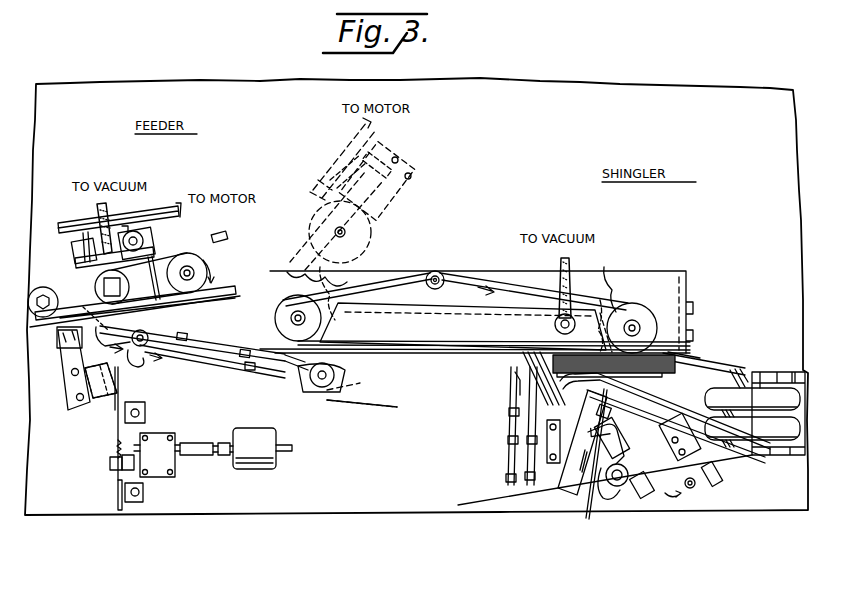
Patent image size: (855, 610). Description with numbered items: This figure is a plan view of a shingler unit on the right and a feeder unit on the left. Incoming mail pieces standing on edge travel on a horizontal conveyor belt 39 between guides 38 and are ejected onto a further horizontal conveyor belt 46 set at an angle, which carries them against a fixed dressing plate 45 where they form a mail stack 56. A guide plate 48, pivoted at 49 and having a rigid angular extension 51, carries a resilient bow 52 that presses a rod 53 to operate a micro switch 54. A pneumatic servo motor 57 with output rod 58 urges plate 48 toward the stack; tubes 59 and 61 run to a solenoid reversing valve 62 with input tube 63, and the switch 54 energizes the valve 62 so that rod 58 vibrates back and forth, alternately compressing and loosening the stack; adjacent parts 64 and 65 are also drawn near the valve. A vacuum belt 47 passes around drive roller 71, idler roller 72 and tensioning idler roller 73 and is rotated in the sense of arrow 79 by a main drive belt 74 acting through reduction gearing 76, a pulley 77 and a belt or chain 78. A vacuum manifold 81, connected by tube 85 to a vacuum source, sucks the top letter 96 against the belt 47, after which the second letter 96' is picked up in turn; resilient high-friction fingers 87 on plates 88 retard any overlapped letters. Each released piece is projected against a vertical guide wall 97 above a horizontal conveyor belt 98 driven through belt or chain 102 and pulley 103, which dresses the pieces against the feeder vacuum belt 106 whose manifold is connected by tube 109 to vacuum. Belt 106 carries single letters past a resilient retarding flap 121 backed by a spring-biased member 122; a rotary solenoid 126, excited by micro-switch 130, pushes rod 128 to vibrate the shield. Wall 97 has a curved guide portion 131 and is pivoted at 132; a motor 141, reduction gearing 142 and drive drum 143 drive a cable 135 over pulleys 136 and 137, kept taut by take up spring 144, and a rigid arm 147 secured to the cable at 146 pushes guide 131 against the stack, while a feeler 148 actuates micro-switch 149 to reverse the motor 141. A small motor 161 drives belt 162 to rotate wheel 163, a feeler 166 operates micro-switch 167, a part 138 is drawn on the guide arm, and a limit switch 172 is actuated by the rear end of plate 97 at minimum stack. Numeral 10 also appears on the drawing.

The frame / section line 10 is at (85, 370).
The guides 38 is at (778, 400).
The horizontal conveyor belt 39 is at (770, 382).
The fixed dressing plate 45 is at (515, 372).
The horizontal conveyor belt 46 is at (742, 372).
The vacuum belt 47 is at (612, 292).
The guide plate 48 is at (710, 413).
The pivot 49 is at (677, 417).
The rigid angular extension 51 is at (688, 492).
The resilient bow 52 is at (636, 390).
The rod 53 is at (607, 383).
The micro switch 54 is at (627, 421).
The mail stack 56 is at (673, 354).
The pneumatic servo motor 57 is at (560, 490).
The output rod 58 is at (593, 428).
The tube 59 is at (581, 500).
The tube 61 is at (627, 456).
The solenoid controlled reversing valve 62 is at (619, 487).
The input tube 63 is at (597, 503).
The stop block 64 is at (720, 474).
The latch block 65 is at (660, 497).
The drive roller 71 is at (310, 305).
The idler roller 72 is at (636, 308).
The tensioning idler roller 73 is at (438, 271).
The main drive belt 74 is at (372, 126).
The reduction gearing 76 is at (382, 196).
The pulley 77 is at (322, 218).
The belt or sprocket chain 78 is at (300, 255).
The arrow 79 is at (492, 268).
The vacuum manifold 81 is at (392, 315).
The vacuum tube 85 is at (572, 264).
The resilient high-friction fingers 87 is at (542, 358).
The plates 88 is at (523, 463).
The top letter 96 is at (368, 371).
The second letter 96' is at (429, 381).
The vertical guide wall 97 is at (245, 349).
The horizontal conveyor belt 98 is at (253, 287).
The drive belt or chain 102 is at (180, 204).
The pulley or sprocket wheel 103 is at (72, 222).
The feeder vacuum belt 106 is at (182, 251).
The vacuum tube 109 is at (112, 212).
The resilient retarding flap 121 is at (47, 288).
The spring-biased member 122 is at (72, 248).
The rotary solenoid 126 is at (110, 228).
The rod 128 is at (173, 253).
The micro-switch 130 is at (235, 226).
The curved guide portion 131 is at (148, 333).
The pivot 132 is at (300, 385).
The cable 135 is at (110, 450).
The pulley 136 is at (118, 370).
The pulley 137 is at (110, 505).
The guide 138 is at (248, 372).
The electric motor 141 is at (258, 468).
The reduction gearing 142 is at (176, 463).
The drive drum 143 is at (142, 433).
The take up spring 144 is at (117, 478).
The cable attachment point 146 is at (108, 422).
The rigid arm 147 is at (97, 405).
The resilient feeler 148 is at (107, 350).
The micro-switch 149 is at (150, 373).
The small motor 161 is at (312, 400).
The belt or cable 162 is at (205, 348).
The wheel 163 is at (141, 330).
The feeler 166 is at (196, 328).
The micro-switch 167 is at (208, 380).
The limit switch 172 is at (352, 388).